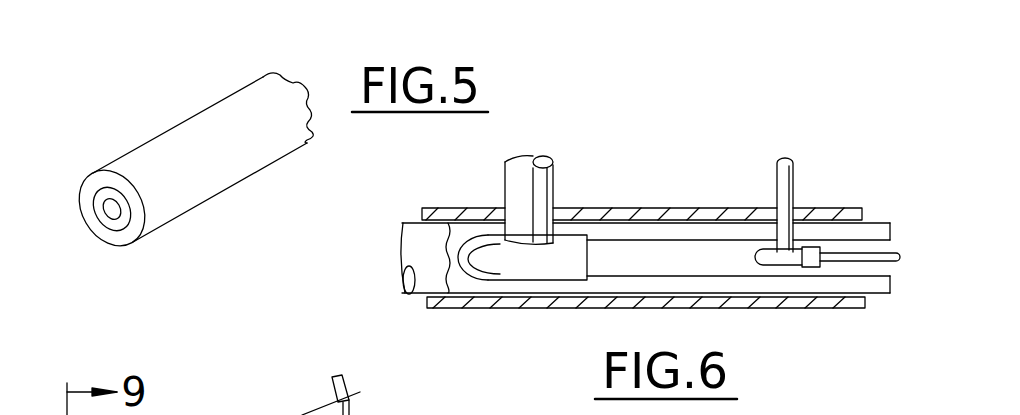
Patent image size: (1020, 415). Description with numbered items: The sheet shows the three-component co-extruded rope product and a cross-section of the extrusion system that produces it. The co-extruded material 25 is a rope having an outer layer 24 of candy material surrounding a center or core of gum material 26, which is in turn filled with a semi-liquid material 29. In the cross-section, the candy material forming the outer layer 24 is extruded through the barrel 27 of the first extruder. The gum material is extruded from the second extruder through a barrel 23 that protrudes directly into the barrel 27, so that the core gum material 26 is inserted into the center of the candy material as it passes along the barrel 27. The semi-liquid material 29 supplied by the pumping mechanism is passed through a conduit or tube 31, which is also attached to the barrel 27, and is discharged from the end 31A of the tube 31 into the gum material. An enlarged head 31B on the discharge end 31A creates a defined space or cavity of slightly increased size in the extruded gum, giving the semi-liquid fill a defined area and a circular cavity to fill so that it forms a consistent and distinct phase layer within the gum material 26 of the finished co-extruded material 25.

In FIG. 6, the barrel 23 is at (515, 173).
In FIG. 5, the outer layer 24 is at (195, 127).
In FIG. 6, the outer layer 24 is at (645, 230).
In FIG. 6, the co-extruded material 25 is at (892, 265).
In FIG. 6, the core gum material 26 is at (607, 270).
In FIG. 6, the barrel 27 is at (517, 300).
In FIG. 6, the semi-liquid material 29 is at (887, 255).
In FIG. 6, the conduit 31 is at (780, 168).
In FIG. 6, the discharge end 31A is at (774, 264).
In FIG. 6, the enlarged head 31B is at (812, 266).